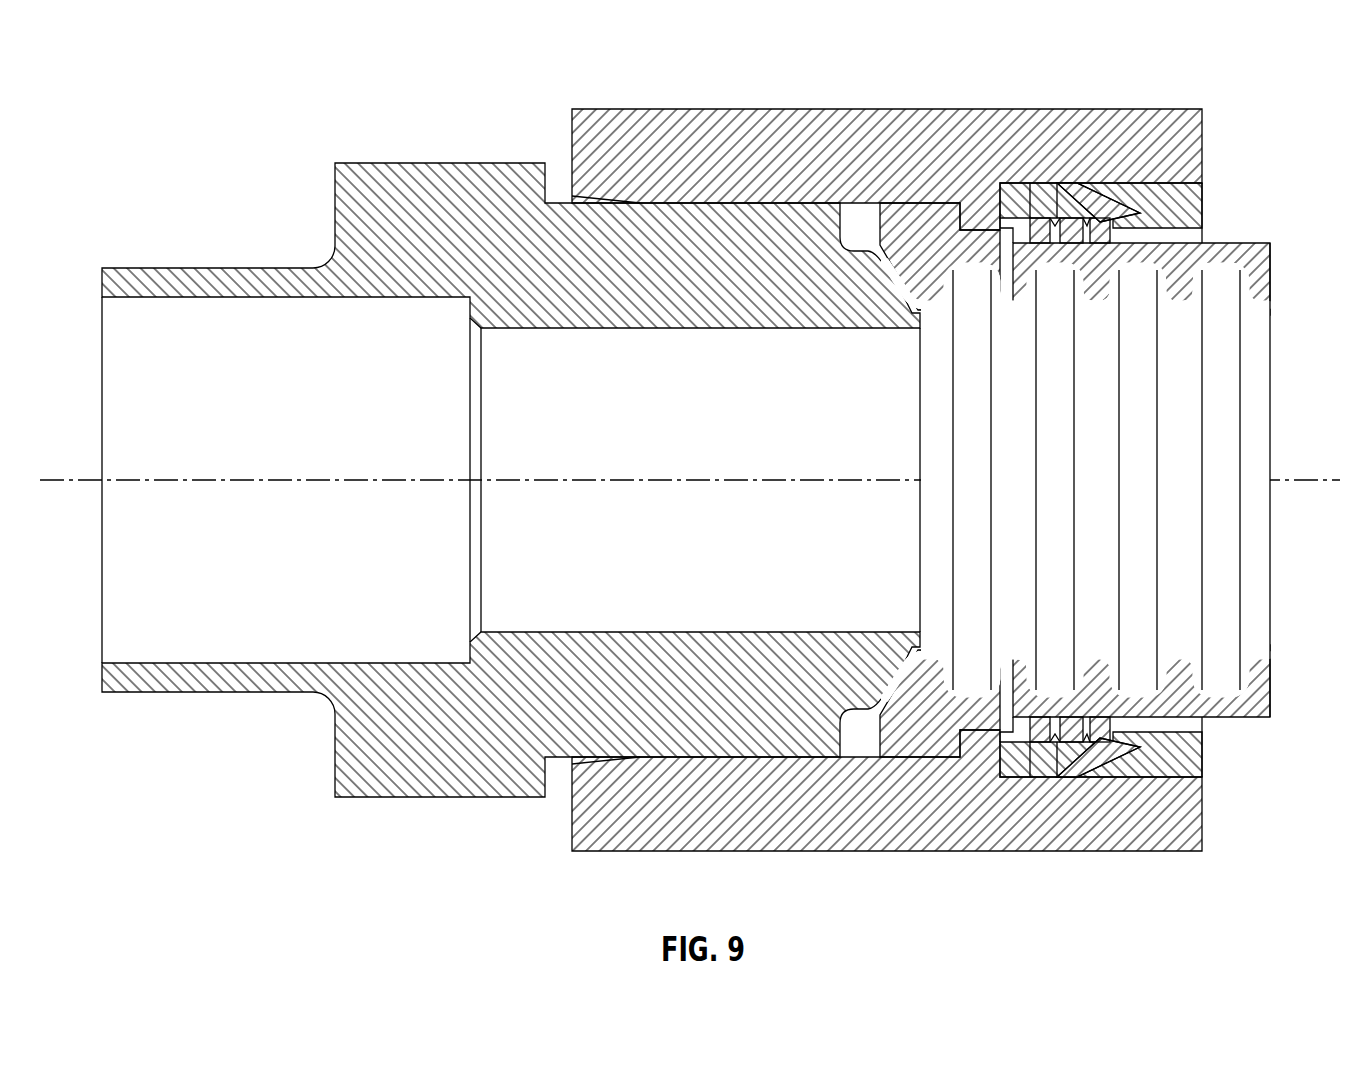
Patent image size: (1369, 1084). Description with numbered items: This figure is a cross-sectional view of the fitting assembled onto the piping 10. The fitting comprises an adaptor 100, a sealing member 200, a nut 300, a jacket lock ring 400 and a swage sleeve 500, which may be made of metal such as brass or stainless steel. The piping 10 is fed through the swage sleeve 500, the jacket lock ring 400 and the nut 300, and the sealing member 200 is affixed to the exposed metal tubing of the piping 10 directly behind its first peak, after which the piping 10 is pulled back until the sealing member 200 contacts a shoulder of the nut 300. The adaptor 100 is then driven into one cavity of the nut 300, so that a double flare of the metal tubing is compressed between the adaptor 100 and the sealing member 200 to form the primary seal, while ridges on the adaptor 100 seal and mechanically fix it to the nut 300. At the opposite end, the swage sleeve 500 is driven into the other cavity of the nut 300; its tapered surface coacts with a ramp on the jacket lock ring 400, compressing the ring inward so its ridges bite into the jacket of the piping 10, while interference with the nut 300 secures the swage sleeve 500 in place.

The piping 10 is at (1297, 396).
The adaptor 100 is at (190, 268).
The sealing member 200 is at (920, 222).
The nut 300 is at (1100, 109).
The jacket lock ring 400 is at (1030, 185).
The swage sleeve 500 is at (1202, 205).